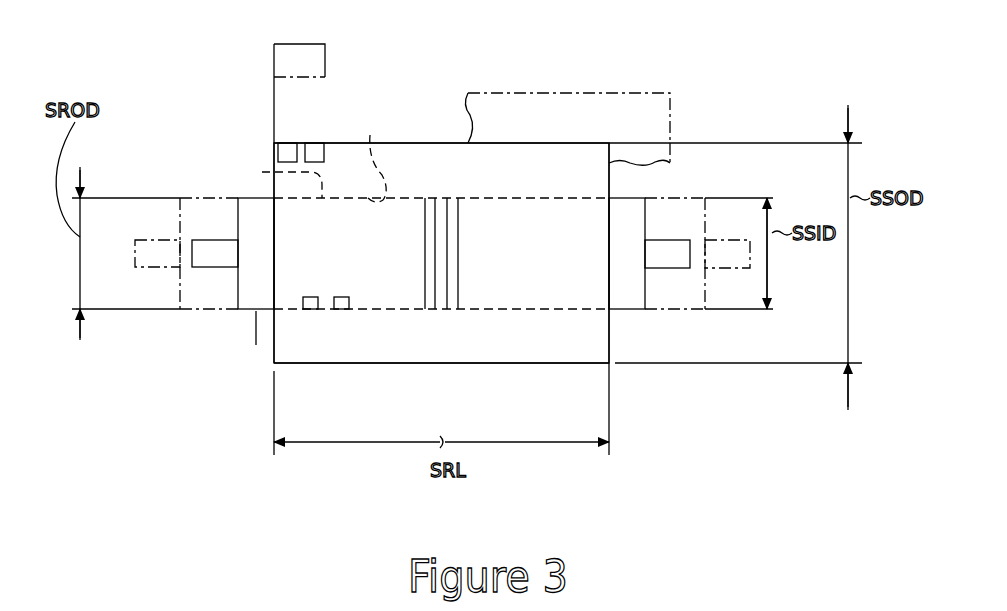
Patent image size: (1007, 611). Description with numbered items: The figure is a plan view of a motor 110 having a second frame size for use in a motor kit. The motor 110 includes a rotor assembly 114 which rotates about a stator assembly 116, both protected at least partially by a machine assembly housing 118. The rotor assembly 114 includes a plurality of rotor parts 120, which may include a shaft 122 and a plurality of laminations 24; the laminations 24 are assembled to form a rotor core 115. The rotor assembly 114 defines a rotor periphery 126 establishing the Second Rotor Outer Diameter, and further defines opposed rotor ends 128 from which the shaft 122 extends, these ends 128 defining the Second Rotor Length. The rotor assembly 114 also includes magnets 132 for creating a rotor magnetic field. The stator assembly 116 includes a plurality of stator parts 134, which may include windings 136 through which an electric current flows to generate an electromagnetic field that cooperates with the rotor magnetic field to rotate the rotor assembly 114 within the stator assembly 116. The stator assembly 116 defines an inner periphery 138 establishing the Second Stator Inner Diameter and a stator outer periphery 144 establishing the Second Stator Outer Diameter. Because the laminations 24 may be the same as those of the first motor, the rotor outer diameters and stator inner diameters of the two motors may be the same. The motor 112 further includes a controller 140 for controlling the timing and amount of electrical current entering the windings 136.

The motor 110 is at (208, 74).
The motor 112 is at (243, 140).
The rotor assembly 114 is at (233, 312).
The rotor core 115 is at (256, 345).
The stator assembly 116 is at (349, 140).
The machine assembly housing 118 is at (565, 93).
The rotor parts 120 is at (175, 297).
The shaft 122 is at (162, 240).
The rotor periphery 126 is at (272, 178).
The rotor ends 128 is at (180, 210).
The magnets 132 is at (341, 309).
The stator parts 134 is at (407, 140).
The windings 136 is at (310, 142).
The inner periphery 138 is at (371, 156).
The controller 140 is at (298, 44).
The stator outer periphery 144 is at (572, 366).
The laminations 24 is at (437, 309).